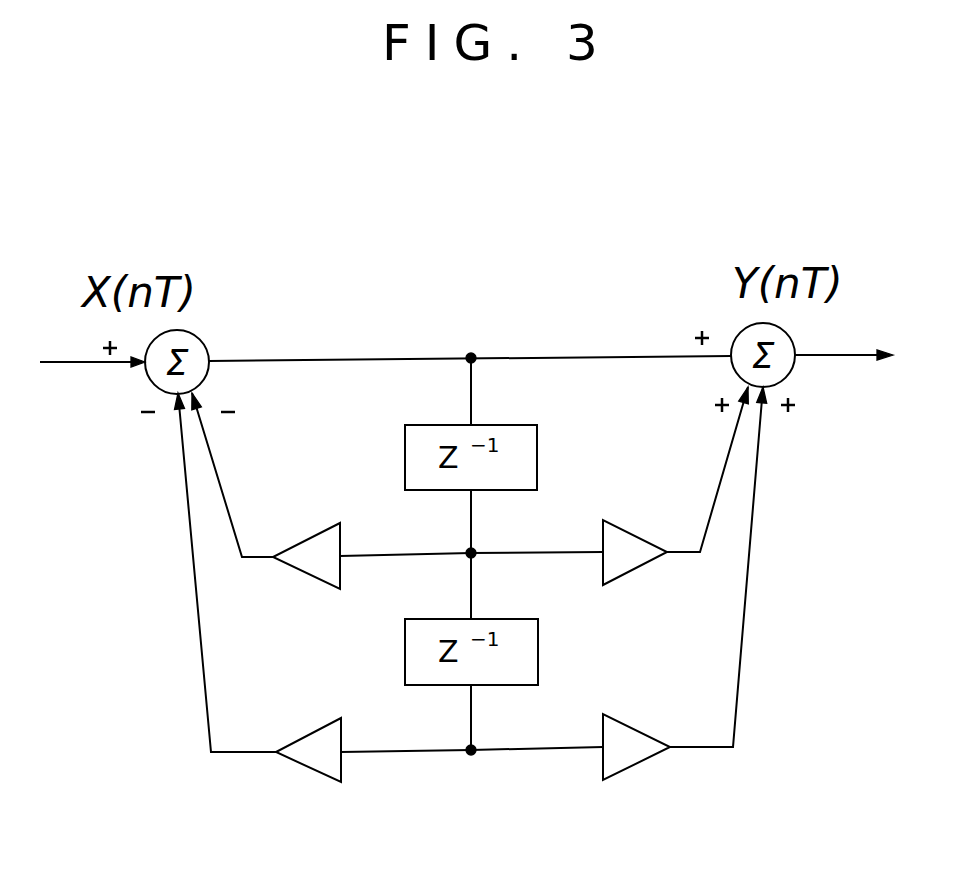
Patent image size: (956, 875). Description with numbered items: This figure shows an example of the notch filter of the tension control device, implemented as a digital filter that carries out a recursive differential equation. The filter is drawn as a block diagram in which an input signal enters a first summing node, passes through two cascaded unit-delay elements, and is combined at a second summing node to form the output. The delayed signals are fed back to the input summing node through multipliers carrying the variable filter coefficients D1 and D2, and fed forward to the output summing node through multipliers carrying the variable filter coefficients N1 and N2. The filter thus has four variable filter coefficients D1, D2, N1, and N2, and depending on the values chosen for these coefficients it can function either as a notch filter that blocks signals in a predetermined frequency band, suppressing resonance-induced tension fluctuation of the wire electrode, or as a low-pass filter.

The variable filter coefficient D1 is at (266, 491).
The variable filter coefficient D2 is at (258, 587).
The variable filter coefficient N1 is at (675, 486).
The variable filter coefficient N2 is at (685, 583).